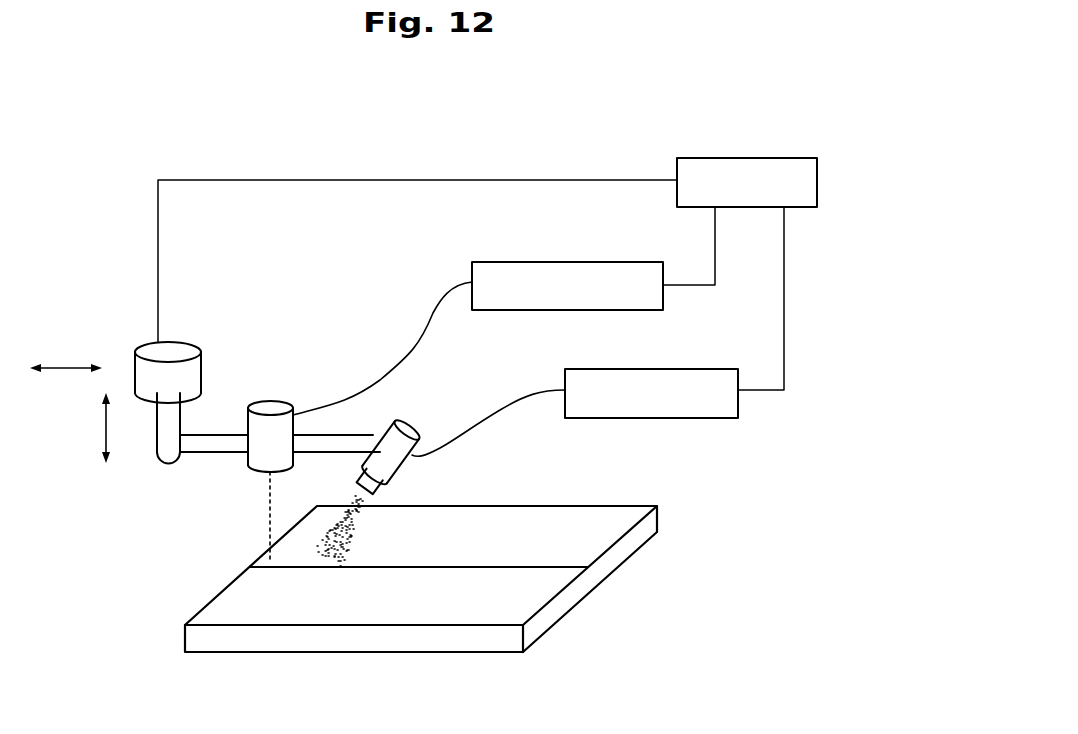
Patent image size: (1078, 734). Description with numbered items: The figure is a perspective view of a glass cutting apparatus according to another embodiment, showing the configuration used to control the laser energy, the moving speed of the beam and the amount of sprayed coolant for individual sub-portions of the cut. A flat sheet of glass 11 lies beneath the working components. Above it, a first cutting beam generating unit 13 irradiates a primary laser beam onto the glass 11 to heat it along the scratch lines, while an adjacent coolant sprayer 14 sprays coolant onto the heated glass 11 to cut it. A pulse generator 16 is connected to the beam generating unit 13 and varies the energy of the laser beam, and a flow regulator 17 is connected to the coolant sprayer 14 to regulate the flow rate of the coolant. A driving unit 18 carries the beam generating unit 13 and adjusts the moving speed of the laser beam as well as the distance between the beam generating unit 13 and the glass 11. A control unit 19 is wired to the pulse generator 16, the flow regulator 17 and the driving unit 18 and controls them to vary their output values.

The glass 11 is at (408, 606).
The first cutting beam generating unit 13 is at (273, 408).
The coolant sprayer 14 is at (385, 468).
The pulse generator 16 is at (516, 257).
The flow regulator 17 is at (668, 366).
The driving unit 18 is at (185, 340).
The control unit 19 is at (765, 155).